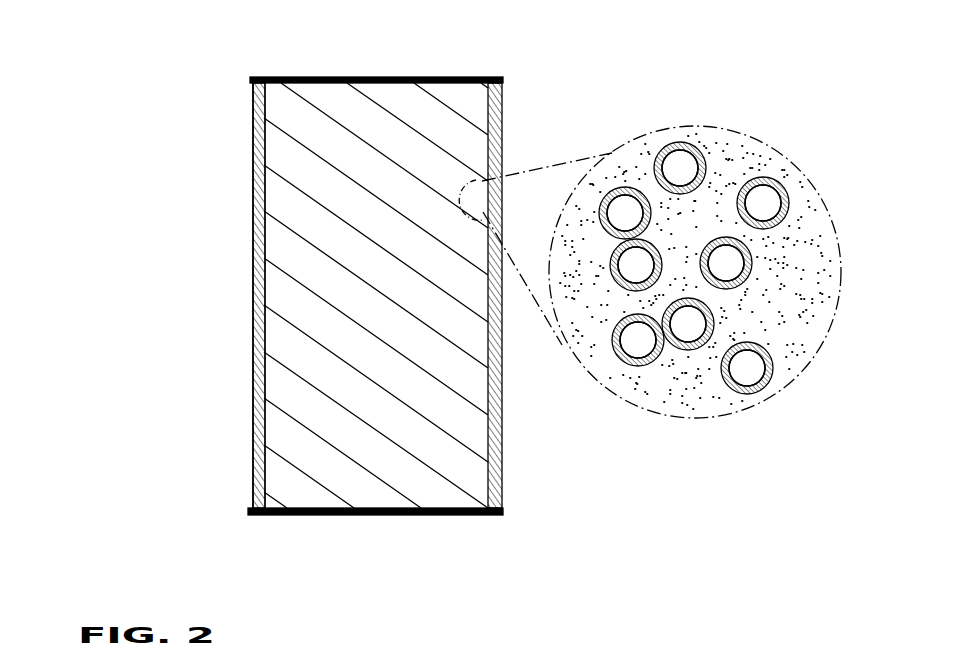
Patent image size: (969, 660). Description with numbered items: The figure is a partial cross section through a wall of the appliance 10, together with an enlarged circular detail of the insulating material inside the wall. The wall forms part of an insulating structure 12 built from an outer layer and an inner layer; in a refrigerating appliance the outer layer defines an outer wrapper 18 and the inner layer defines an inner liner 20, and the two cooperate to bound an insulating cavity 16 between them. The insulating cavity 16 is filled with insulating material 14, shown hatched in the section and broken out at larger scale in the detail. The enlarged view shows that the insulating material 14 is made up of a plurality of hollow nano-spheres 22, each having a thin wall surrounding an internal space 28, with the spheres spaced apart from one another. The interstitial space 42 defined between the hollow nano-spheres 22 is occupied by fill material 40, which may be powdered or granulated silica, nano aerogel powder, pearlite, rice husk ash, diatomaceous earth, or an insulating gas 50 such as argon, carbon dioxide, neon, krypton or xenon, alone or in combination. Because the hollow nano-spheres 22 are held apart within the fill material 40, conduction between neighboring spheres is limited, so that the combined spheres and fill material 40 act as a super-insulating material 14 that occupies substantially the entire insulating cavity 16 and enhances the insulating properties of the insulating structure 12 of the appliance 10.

The appliance 10 is at (368, 313).
The insulating structure 12 is at (250, 303).
The insulating material 14 is at (338, 108).
The insulating cavity 16 is at (352, 480).
The outer wrapper 18 is at (253, 252).
The inner liner 20 is at (502, 130).
The hollow nano-spheres 22 is at (758, 175).
The internal space 28 is at (748, 368).
The fill material 40 is at (652, 387).
The interstitial space 42 is at (723, 173).
The insulating gas 50 is at (773, 328).